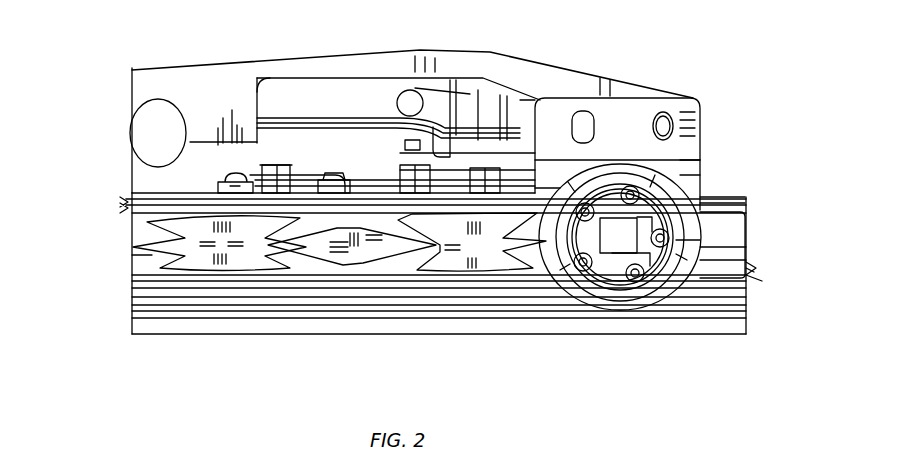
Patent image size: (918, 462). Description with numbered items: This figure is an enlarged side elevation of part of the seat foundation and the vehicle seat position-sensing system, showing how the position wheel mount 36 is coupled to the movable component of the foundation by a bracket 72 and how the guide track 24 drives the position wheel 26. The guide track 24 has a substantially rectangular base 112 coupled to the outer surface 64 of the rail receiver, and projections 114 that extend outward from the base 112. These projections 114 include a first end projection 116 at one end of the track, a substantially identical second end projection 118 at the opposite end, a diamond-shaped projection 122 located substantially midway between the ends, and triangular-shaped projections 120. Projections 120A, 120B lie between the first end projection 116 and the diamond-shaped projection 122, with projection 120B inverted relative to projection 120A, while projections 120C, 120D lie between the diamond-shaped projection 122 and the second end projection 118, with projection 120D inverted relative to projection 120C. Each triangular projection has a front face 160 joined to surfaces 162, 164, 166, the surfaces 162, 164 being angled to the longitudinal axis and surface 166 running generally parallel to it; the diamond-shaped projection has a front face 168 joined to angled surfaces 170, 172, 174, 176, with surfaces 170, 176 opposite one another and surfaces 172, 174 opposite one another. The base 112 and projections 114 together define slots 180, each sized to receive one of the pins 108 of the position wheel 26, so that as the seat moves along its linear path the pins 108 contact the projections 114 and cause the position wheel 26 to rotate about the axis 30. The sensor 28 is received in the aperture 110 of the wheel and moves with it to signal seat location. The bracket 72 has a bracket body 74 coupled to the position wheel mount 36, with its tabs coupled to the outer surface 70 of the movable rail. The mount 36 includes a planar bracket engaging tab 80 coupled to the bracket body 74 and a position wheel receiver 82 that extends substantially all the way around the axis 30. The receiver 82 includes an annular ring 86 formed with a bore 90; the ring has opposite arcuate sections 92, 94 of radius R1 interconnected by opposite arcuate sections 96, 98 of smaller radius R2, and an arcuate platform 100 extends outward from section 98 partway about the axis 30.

The guide track 24 is at (389, 264).
The position wheel 26 is at (676, 166).
The sensor 28 is at (610, 258).
The axis 30 is at (636, 224).
The position wheel mount 36 is at (687, 92).
The outer surface 64 is at (347, 230).
The outer surface 70 is at (510, 196).
The bracket 72 is at (463, 70).
The bracket body 74 is at (386, 70).
The bracket engaging tab 80 is at (629, 134).
The position wheel receiver 82 is at (653, 165).
The annular ring 86 is at (651, 295).
The bore 90 is at (568, 265).
The arcuate section 92 is at (472, 242).
The arcuate section 94 is at (685, 238).
The arcuate section 96 is at (626, 164).
The arcuate section 98 is at (630, 300).
The arcuate platform 100 is at (676, 288).
The pins 108 is at (585, 273).
The aperture 110 is at (625, 256).
The base 112 is at (150, 266).
The projections 114 is at (303, 262).
The first end projection 116 is at (151, 247).
The second end projection 118 is at (709, 219).
The triangular-shaped projections 120 is at (242, 221).
The projection 120A is at (206, 211).
The projection 120B is at (207, 270).
The projection 120C is at (464, 221).
The projection 120D is at (465, 275).
The diamond-shaped projection 122 is at (360, 246).
The front face 160 is at (354, 240).
The surface 162 is at (187, 241).
The surface 164 is at (263, 241).
The surface 166 is at (168, 206).
The front face 168 is at (362, 236).
The surface 170 is at (311, 264).
The surface 172 is at (397, 265).
The surface 174 is at (318, 228).
The surface 176 is at (389, 228).
The slots 180 is at (451, 245).
The radius R1 is at (572, 258).
The radius R2 is at (617, 216).